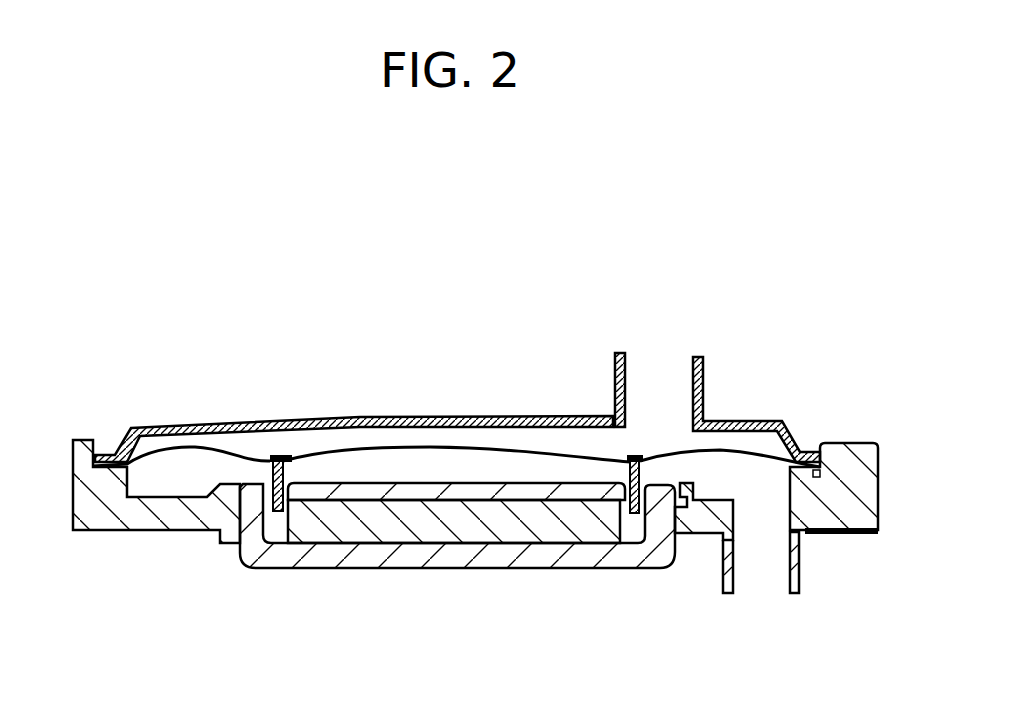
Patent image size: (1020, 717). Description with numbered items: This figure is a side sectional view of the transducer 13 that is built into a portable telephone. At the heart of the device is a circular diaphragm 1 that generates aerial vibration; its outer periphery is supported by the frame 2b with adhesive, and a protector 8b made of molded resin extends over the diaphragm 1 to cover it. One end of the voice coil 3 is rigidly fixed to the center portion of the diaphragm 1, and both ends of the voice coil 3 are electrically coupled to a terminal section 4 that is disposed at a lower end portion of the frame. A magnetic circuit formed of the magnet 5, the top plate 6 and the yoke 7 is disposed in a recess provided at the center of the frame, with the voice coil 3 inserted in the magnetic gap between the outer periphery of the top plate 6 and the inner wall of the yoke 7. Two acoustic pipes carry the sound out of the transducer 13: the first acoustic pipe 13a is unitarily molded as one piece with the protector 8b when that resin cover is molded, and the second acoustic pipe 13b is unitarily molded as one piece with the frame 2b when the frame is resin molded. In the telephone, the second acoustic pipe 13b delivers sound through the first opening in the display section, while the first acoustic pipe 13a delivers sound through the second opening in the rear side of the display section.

The diaphragm 1 is at (727, 447).
The frame 2b is at (117, 520).
The voice coil 3 is at (637, 457).
The terminal section 4 is at (837, 532).
The magnet 5 is at (503, 527).
The top plate 6 is at (407, 493).
The yoke 7 is at (637, 563).
The protector 8b is at (410, 413).
The transducer 13 is at (850, 450).
The first acoustic pipe 13a is at (707, 373).
The second acoustic pipe 13b is at (797, 593).